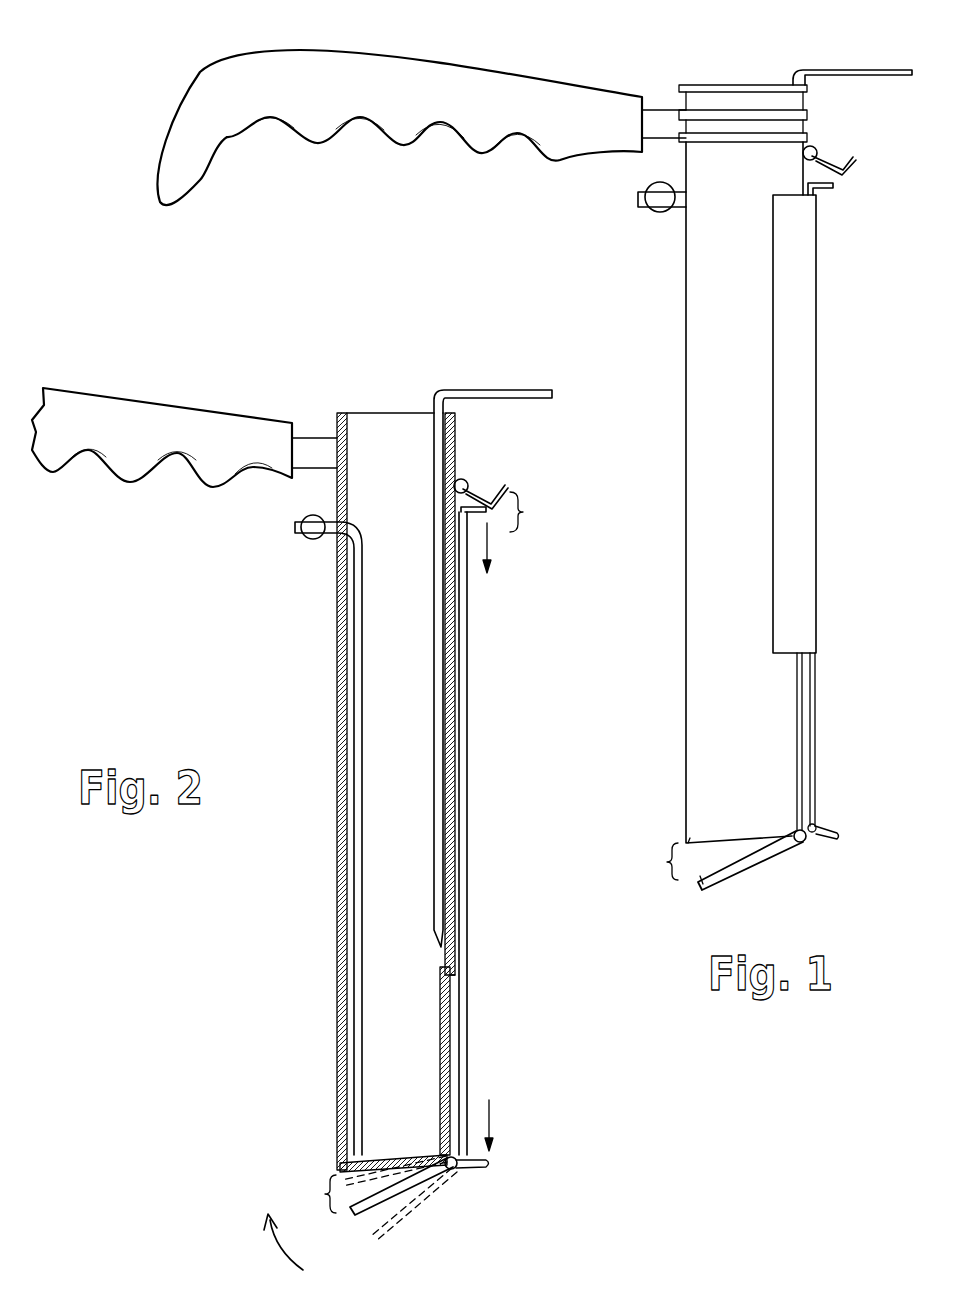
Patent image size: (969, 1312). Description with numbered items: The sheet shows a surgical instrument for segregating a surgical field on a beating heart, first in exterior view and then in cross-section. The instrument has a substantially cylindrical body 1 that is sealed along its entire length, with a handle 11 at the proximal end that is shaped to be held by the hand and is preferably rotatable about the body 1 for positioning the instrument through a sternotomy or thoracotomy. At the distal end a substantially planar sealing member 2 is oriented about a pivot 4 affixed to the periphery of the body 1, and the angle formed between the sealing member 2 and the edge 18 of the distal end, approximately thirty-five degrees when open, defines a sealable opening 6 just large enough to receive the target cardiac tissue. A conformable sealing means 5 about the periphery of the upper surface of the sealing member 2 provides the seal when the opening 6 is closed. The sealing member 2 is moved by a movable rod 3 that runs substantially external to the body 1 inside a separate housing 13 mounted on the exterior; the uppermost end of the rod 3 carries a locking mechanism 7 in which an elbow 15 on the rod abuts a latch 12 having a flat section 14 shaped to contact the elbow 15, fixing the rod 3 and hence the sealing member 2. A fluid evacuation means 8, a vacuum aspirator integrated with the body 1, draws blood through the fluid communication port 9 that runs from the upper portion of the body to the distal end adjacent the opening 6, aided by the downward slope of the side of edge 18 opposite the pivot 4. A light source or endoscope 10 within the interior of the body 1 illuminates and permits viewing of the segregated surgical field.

In FIG. 1, the body of the instrument 1 is at (697, 335).
In FIG. 2, the body of the instrument 1 is at (373, 505).
In FIG. 1, the sealing member 2 is at (730, 878).
In FIG. 2, the sealing member 2 is at (364, 1235).
In FIG. 1, the movable rod 3 is at (816, 740).
In FIG. 2, the movable rod 3 is at (268, 698).
In FIG. 1, the pivot 4 is at (800, 843).
In FIG. 2, the pivot 4 is at (283, 1017).
In FIG. 1, the conformable sealing means 5 is at (700, 876).
In FIG. 2, the conformable sealing means 5 is at (352, 1206).
In FIG. 1, the sealable opening 6 is at (667, 862).
In FIG. 2, the sealable opening 6 is at (325, 1194).
In FIG. 2, the locking mechanism 7 is at (523, 515).
In FIG. 2, the fluid evacuation means 8 is at (330, 540).
In FIG. 1, the fluid communication port 9 is at (650, 204).
In FIG. 2, the fluid communication port 9 is at (303, 538).
In FIG. 1, the light source or endoscope 10 is at (843, 68).
In FIG. 2, the light source or endoscope 10 is at (478, 392).
In FIG. 1, the handle 11 is at (404, 119).
In FIG. 2, the handle 11 is at (213, 487).
In FIG. 1, the latch 12 is at (820, 150).
In FIG. 1, the housing 13 is at (808, 458).
In FIG. 2, the housing 13 is at (466, 683).
In FIG. 1, the flat section 14 is at (855, 165).
In FIG. 1, the elbow 15 is at (825, 195).
In FIG. 1, the edge of the distal end of the body 18 is at (724, 838).